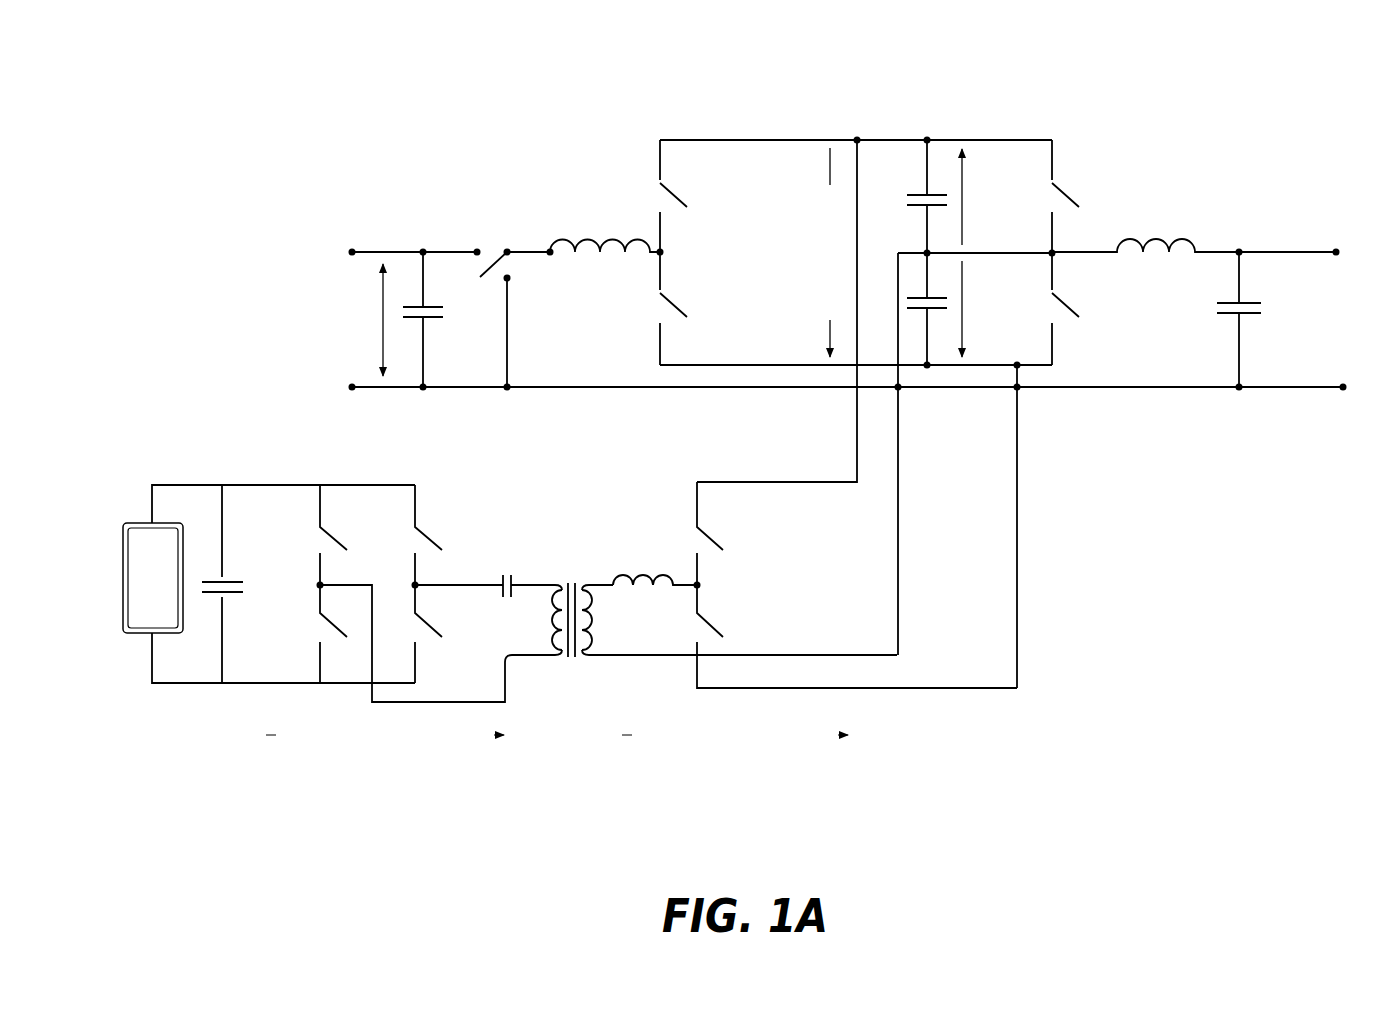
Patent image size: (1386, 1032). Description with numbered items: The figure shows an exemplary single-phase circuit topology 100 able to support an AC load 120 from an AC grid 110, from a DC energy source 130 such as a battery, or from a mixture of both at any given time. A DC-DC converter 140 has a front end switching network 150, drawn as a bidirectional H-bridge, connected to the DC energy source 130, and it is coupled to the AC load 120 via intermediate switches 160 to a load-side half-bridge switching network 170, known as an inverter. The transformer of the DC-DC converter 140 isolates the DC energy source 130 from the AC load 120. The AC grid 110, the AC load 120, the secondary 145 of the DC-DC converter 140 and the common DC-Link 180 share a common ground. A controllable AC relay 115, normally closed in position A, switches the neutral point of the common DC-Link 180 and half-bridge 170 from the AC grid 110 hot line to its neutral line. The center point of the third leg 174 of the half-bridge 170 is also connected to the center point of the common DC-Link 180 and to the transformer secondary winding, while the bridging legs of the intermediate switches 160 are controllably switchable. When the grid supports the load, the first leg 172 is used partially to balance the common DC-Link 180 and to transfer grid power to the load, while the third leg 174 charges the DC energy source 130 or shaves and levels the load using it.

The circuit topology 100 is at (732, 401).
The AC grid 110 is at (356, 292).
The AC relay 115 is at (521, 228).
The AC load 120 is at (1350, 369).
The DC energy source 130 is at (116, 552).
The DC-DC converter 140 is at (562, 575).
The secondary of the DC-DC converter 145 is at (870, 708).
The front end switching network 150 is at (306, 470).
The intermediate switches 160 is at (681, 530).
The load-side half-bridge switching network 170 is at (815, 106).
The leg #1 172 is at (647, 138).
The leg #3 174 is at (845, 415).
The common DC-Link 180 is at (925, 251).